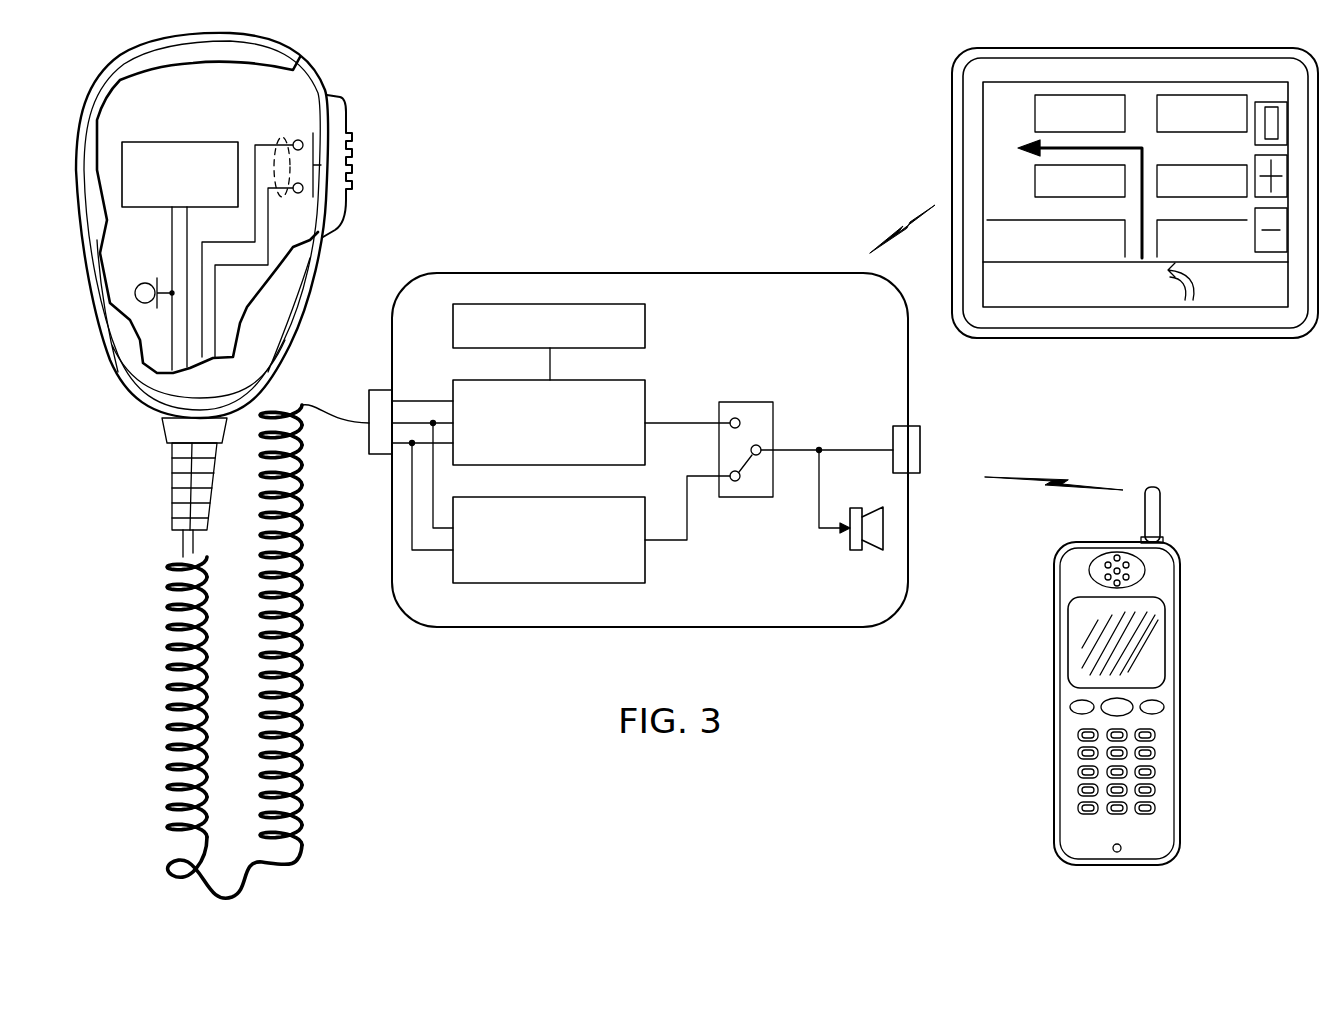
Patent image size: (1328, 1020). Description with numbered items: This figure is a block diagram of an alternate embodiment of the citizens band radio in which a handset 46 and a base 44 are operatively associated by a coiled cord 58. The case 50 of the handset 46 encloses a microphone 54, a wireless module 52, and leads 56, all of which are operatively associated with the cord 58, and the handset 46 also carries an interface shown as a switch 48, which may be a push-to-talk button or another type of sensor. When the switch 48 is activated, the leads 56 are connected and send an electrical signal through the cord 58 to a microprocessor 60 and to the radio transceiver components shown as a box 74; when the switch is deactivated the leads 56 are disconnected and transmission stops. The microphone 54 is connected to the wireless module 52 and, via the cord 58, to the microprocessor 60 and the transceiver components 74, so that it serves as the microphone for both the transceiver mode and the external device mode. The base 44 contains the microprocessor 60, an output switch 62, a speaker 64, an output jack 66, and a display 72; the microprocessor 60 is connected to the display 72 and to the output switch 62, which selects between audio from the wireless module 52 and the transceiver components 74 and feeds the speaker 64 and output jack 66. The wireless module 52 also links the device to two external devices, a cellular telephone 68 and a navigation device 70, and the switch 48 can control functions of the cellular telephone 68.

The base 44 is at (539, 627).
The handset 46 is at (127, 412).
The switch 48 is at (352, 142).
The case 50 is at (305, 76).
The wireless module 52 is at (150, 140).
The microphone 54 is at (145, 283).
The leads 56 is at (280, 140).
The cord 58 is at (167, 730).
The microprocessor 60 is at (645, 404).
The output switch 62 is at (752, 402).
The speaker 64 is at (855, 552).
The output jack 66 is at (893, 442).
The cellular telephone 68 is at (1182, 705).
The navigation device 70 is at (951, 155).
The display 72 is at (645, 325).
The radio transceiver components 74 is at (535, 554).